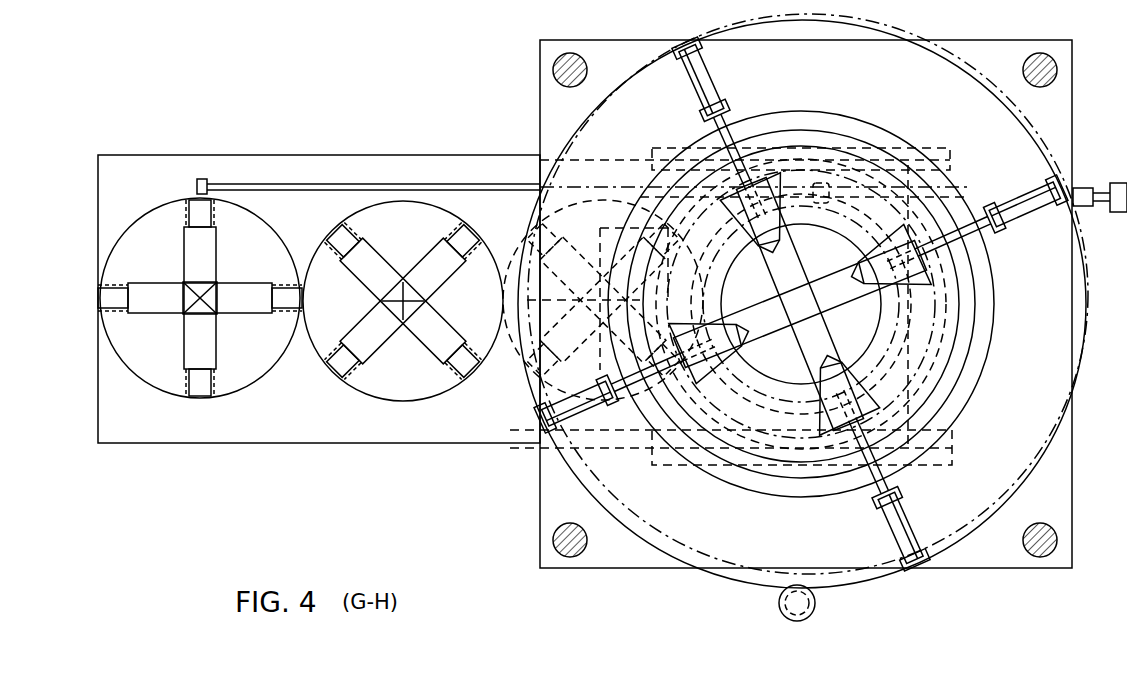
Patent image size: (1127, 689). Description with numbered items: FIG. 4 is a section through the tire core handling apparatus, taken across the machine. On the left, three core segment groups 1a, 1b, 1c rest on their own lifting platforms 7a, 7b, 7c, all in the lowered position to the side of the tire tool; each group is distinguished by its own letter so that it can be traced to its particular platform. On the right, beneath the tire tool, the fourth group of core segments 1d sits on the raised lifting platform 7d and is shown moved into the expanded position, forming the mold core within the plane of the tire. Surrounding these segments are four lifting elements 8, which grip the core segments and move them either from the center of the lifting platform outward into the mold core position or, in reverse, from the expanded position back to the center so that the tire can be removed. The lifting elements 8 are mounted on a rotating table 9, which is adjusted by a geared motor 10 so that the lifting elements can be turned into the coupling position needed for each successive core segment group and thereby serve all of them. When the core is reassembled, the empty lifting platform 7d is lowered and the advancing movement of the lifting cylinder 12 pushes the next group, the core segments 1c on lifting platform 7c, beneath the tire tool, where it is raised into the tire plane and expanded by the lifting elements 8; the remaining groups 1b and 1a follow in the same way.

The core segment group 1a is at (153, 290).
The core segment group 1b is at (433, 343).
The core segment group 1c is at (600, 300).
The core segments 1d is at (860, 392).
The lifting platform 7a is at (255, 367).
The lifting platform 7b is at (410, 388).
The lifting platform 7c is at (603, 317).
The lifting platform 7d is at (790, 387).
The lifting elements 8 is at (710, 83).
The rotating table 9 is at (750, 555).
The geared motor 10 is at (812, 601).
The lifting cylinder 12 is at (1077, 195).